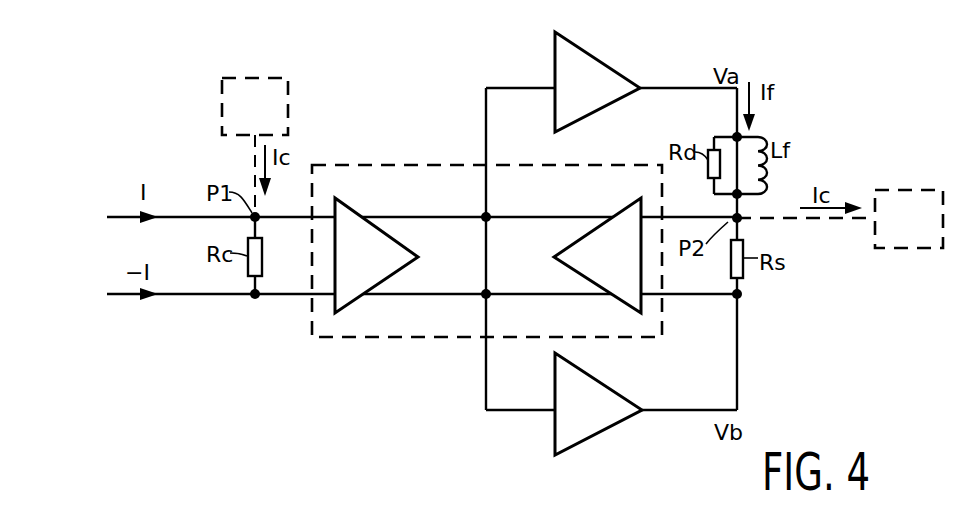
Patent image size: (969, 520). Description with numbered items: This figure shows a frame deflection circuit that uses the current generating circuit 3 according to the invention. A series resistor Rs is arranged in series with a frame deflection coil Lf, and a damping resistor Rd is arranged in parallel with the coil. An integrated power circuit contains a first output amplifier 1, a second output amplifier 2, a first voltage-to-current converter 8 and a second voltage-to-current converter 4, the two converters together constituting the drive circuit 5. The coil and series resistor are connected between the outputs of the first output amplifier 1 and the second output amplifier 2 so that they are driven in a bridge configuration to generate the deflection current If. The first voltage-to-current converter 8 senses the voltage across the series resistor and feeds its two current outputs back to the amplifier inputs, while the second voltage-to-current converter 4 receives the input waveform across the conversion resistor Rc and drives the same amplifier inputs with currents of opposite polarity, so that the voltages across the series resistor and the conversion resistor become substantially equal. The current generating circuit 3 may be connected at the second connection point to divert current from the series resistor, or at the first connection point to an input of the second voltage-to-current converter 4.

The first output amplifier 1 is at (585, 62).
The second output amplifier 2 is at (597, 390).
The current generating circuit 3 is at (268, 88).
The second voltage-to-current converter 4 is at (340, 212).
The drive circuit 5 is at (400, 164).
The first voltage-to-current converter 8 is at (625, 213).